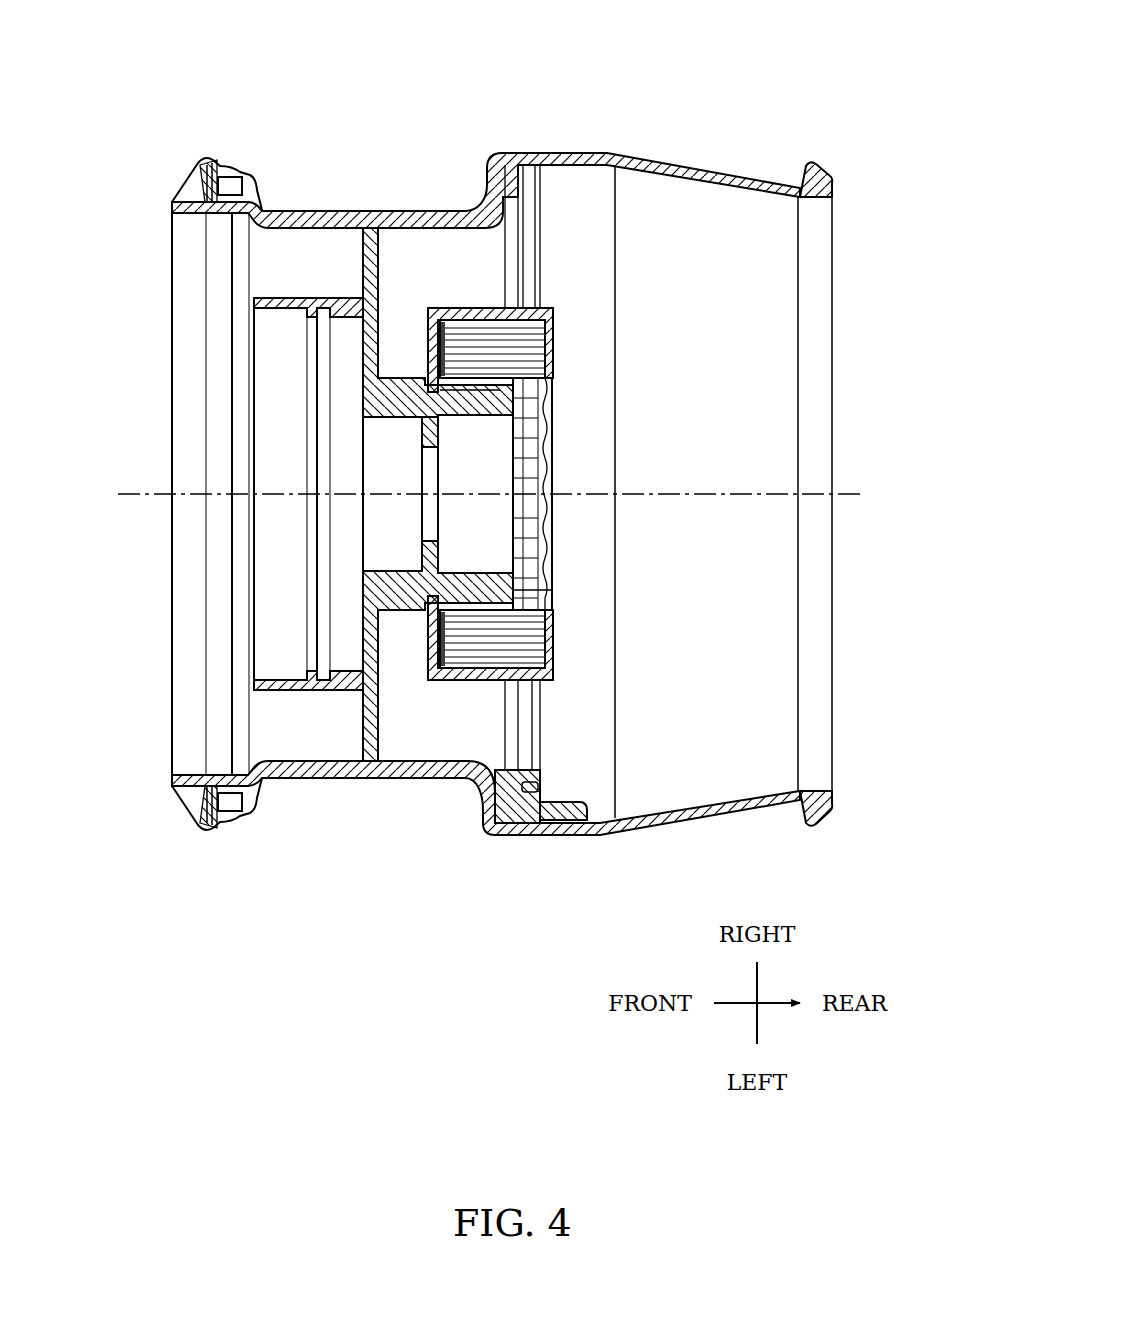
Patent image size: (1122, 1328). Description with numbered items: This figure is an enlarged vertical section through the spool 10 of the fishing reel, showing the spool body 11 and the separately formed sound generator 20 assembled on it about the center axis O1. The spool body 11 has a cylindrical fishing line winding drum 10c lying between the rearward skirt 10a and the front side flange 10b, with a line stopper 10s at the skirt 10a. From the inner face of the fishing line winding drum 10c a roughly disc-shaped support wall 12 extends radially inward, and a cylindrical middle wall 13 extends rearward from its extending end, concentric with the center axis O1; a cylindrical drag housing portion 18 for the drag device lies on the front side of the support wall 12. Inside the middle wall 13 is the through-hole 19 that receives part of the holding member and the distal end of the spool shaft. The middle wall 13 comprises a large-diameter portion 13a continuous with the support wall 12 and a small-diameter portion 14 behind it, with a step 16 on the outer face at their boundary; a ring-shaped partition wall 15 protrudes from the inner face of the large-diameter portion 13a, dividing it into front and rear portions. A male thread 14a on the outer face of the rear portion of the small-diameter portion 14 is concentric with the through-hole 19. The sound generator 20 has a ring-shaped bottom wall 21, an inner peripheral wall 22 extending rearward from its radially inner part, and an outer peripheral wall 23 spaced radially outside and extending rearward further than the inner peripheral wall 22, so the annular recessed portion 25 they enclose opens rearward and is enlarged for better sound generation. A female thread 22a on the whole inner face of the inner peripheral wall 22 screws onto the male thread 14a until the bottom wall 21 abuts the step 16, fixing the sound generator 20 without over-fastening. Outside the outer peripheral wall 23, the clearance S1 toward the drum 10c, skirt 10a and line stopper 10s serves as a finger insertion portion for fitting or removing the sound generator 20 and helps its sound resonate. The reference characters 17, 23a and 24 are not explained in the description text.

The spool 10 is at (712, 96).
The skirt 10a is at (615, 153).
The front side flange 10b is at (205, 158).
The fishing line winding drum 10c is at (330, 211).
The line stopper 10s is at (522, 830).
The spool body 11 is at (690, 160).
The support wall 12 is at (363, 272).
The middle wall 13 is at (363, 410).
The large-diameter portion 13a is at (363, 400).
The small-diameter portion 14 is at (510, 553).
The male thread 14a is at (513, 596).
The partition wall 15 is at (422, 447).
The step 16 is at (430, 615).
The lower hub wall 17 is at (378, 710).
The drag housing portion 18 is at (278, 300).
The through-hole 19 is at (385, 514).
The sound generator 20 is at (562, 345).
The bottom wall 21 is at (430, 347).
The inner peripheral wall 22 is at (513, 372).
The female thread 22a is at (513, 428).
The outer peripheral wall 23 is at (490, 308).
The knurled portion 23a is at (545, 324).
The lower engagement member 24 is at (522, 643).
The recessed portion 25 is at (512, 628).
The center axis O1 is at (872, 490).
The clearance S1 is at (483, 266).